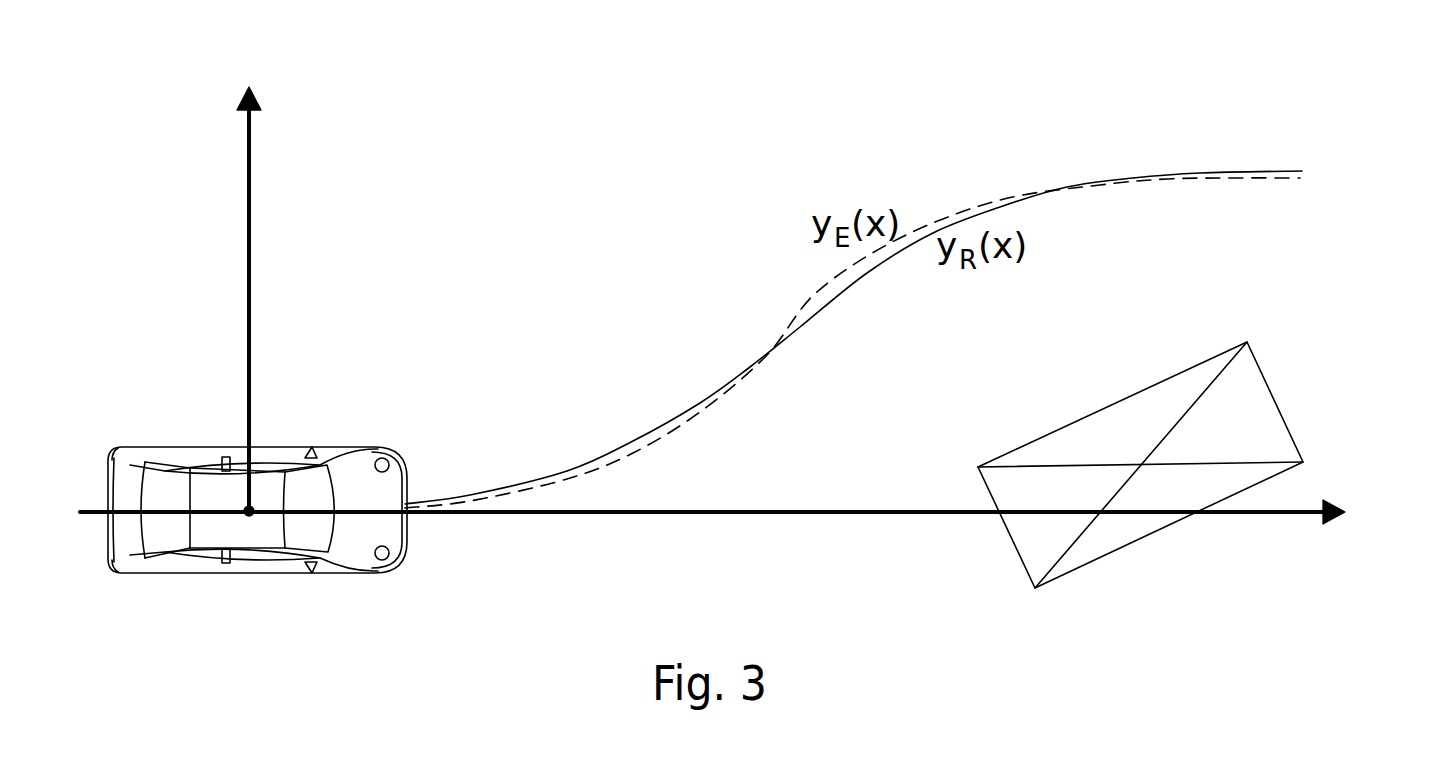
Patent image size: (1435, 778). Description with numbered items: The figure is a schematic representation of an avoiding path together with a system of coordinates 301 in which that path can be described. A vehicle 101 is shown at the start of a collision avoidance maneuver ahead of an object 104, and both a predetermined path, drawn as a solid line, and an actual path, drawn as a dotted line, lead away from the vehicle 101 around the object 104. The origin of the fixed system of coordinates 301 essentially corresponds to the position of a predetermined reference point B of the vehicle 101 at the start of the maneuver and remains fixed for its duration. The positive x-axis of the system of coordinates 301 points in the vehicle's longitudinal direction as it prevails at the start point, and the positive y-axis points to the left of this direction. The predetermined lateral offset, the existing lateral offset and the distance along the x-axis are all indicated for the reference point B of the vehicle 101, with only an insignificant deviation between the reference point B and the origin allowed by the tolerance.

The vehicle 101 is at (167, 527).
The object 104 is at (1278, 402).
The system of coordinates 301 is at (250, 378).
The reference point B is at (247, 509).